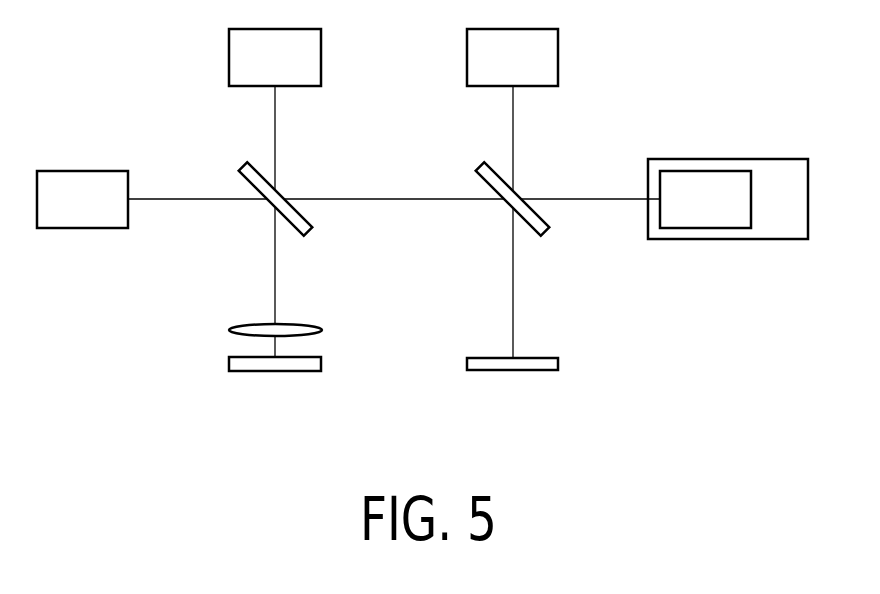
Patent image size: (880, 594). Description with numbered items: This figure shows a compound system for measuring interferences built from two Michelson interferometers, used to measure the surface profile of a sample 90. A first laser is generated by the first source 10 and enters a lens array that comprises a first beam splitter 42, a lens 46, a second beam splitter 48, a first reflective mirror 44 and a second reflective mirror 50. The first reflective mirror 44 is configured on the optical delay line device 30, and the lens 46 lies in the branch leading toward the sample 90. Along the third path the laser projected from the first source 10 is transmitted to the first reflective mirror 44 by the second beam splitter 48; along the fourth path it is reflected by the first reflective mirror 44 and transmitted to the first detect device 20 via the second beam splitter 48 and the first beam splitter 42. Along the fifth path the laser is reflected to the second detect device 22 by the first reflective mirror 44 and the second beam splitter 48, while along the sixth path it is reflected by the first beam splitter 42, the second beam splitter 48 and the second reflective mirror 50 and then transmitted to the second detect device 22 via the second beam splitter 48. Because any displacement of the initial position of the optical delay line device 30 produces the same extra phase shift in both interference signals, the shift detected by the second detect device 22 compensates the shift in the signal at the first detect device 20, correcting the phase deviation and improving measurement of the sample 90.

The first source 10 is at (262, 68).
The first detect device 20 is at (69, 212).
The second detect device 22 is at (499, 68).
The optical delay line device 30 is at (766, 212).
The first reflective mirror 44 is at (692, 212).
The first beam splitter 42 is at (304, 236).
The second beam splitter 48 is at (541, 236).
The lens 46 is at (322, 332).
The sample 90 is at (228, 371).
The second reflective mirror 50 is at (558, 370).